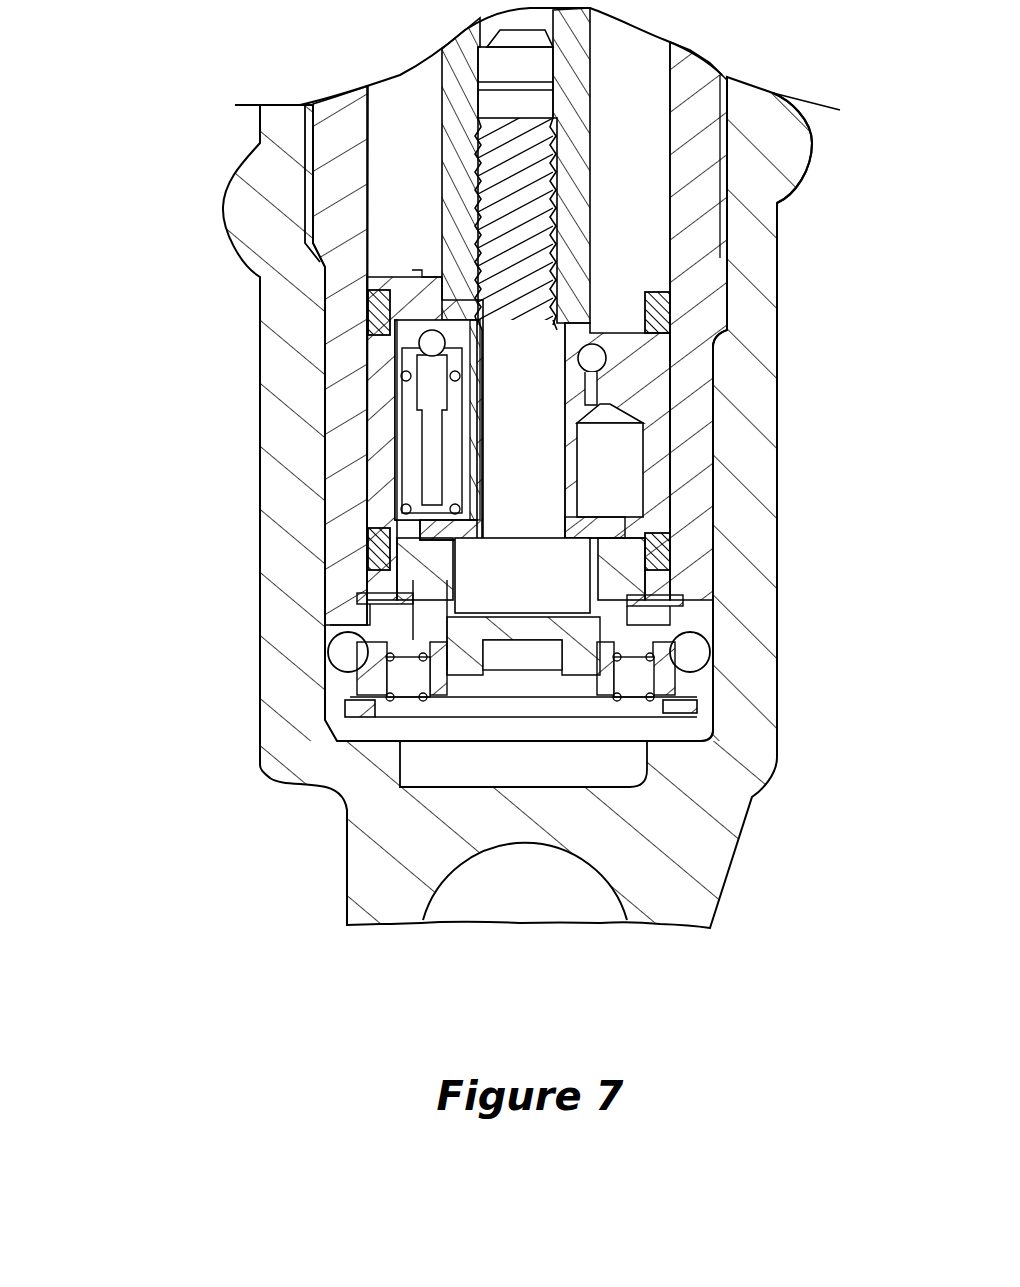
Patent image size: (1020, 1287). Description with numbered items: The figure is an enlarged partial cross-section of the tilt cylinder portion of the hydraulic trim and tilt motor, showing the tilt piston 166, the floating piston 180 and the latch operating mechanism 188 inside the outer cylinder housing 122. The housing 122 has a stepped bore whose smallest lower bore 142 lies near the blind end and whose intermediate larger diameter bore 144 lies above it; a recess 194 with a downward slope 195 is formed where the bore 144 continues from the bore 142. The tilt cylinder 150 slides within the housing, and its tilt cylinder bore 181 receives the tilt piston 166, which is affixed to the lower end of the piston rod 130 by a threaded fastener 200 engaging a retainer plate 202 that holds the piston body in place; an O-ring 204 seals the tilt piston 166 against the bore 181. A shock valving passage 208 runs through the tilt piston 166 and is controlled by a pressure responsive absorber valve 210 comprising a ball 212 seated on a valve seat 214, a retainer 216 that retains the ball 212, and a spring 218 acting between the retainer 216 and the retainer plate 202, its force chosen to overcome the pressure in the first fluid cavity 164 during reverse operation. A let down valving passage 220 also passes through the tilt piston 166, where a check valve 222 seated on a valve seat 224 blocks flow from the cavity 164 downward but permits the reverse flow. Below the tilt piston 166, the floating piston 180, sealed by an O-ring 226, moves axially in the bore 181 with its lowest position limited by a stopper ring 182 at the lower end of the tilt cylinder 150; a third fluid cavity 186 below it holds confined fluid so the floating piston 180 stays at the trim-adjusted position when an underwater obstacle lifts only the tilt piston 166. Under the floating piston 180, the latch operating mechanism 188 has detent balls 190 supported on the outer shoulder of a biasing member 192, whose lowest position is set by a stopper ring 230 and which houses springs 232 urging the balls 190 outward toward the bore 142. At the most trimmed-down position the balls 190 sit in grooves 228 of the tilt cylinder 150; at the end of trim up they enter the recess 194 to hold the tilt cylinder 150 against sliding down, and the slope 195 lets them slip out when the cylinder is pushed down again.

The outer cylinder housing 122 is at (784, 312).
The piston rod 130 is at (592, 185).
The lower bore 142 is at (703, 487).
The intermediate larger diameter bore 144 is at (805, 122).
The tilt cylinder 150 is at (703, 413).
The first fluid cavity 164 is at (650, 90).
The tilt piston 166 is at (667, 466).
The floating piston 180 is at (665, 592).
The tilt cylinder bore 181 is at (380, 170).
The stopper ring 182 is at (690, 603).
The third fluid cavity 186 is at (700, 860).
The latch operating mechanism 188 is at (324, 605).
The detent balls 190 is at (635, 685).
The biasing member 192 is at (705, 725).
The recess 194 is at (408, 358).
The downward slope 195 is at (402, 372).
The threaded fastener 200 is at (592, 232).
The retainer plate 202 is at (388, 527).
The O-ring 204 is at (345, 300).
The shock valving passage 208 is at (427, 267).
The pressure responsive absorber valve 210 is at (125, 398).
The ball 212 is at (433, 388).
The valve seat 214 is at (370, 290).
The retainer 216 is at (403, 452).
The spring 218 is at (430, 525).
The let down valving passage 220 is at (600, 300).
The check valve 222 is at (607, 355).
The valve seat 224 is at (640, 405).
The O-ring 226 is at (368, 545).
The grooves 228 is at (700, 655).
The stopper ring 230 is at (610, 770).
The springs 232 is at (360, 707).